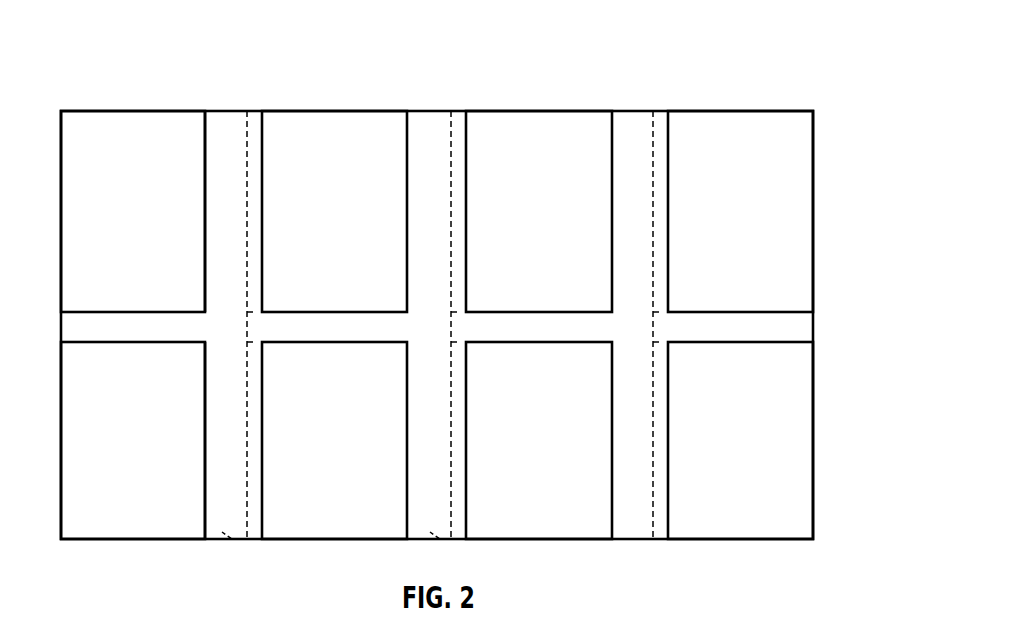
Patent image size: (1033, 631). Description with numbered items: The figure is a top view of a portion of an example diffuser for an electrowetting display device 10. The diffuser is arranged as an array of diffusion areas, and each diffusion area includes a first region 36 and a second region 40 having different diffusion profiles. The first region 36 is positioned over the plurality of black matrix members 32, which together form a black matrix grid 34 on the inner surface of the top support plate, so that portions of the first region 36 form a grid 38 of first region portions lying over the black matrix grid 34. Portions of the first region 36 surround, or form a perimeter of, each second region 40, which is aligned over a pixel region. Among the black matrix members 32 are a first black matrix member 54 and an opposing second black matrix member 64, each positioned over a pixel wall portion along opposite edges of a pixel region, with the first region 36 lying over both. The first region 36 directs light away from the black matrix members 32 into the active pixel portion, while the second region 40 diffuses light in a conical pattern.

The electrowetting display device 10 is at (140, 45).
The black matrix members 32 is at (437, 324).
The black matrix grid 34 is at (227, 122).
The first region 36 is at (441, 130).
The grid of first region portions 38 is at (240, 126).
The second region 40 is at (352, 128).
The first black matrix member 54 is at (226, 536).
The second black matrix member 64 is at (434, 536).